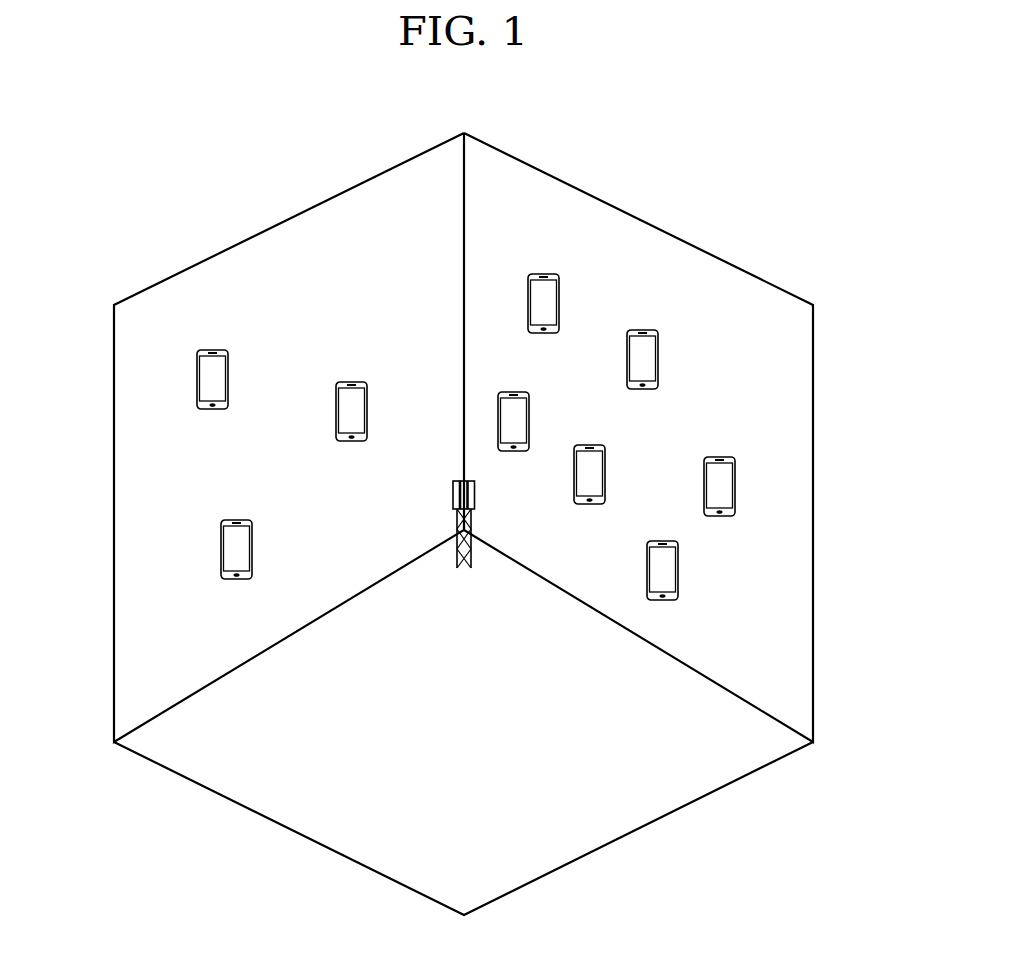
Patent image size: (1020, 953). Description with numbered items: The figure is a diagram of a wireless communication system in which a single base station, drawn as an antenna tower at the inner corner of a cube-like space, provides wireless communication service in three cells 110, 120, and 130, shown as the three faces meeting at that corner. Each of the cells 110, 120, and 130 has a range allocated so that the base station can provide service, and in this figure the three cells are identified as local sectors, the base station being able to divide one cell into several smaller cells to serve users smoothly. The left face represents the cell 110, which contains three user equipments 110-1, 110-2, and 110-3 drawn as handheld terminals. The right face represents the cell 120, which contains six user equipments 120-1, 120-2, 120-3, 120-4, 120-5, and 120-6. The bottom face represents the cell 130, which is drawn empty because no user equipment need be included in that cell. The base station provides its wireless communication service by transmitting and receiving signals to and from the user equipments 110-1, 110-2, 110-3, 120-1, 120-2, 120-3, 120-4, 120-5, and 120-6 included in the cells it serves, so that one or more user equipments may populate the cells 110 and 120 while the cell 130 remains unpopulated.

The cell 110 is at (114, 410).
The cell 120 is at (815, 346).
The cell 130 is at (630, 835).
The user equipment 110-1 is at (212, 351).
The user equipment 110-2 is at (351, 383).
The user equipment 110-3 is at (236, 521).
The user equipment 120-1 is at (543, 275).
The user equipment 120-2 is at (642, 331).
The user equipment 120-3 is at (513, 393).
The user equipment 120-4 is at (719, 458).
The user equipment 120-5 is at (589, 446).
The user equipment 120-6 is at (679, 575).